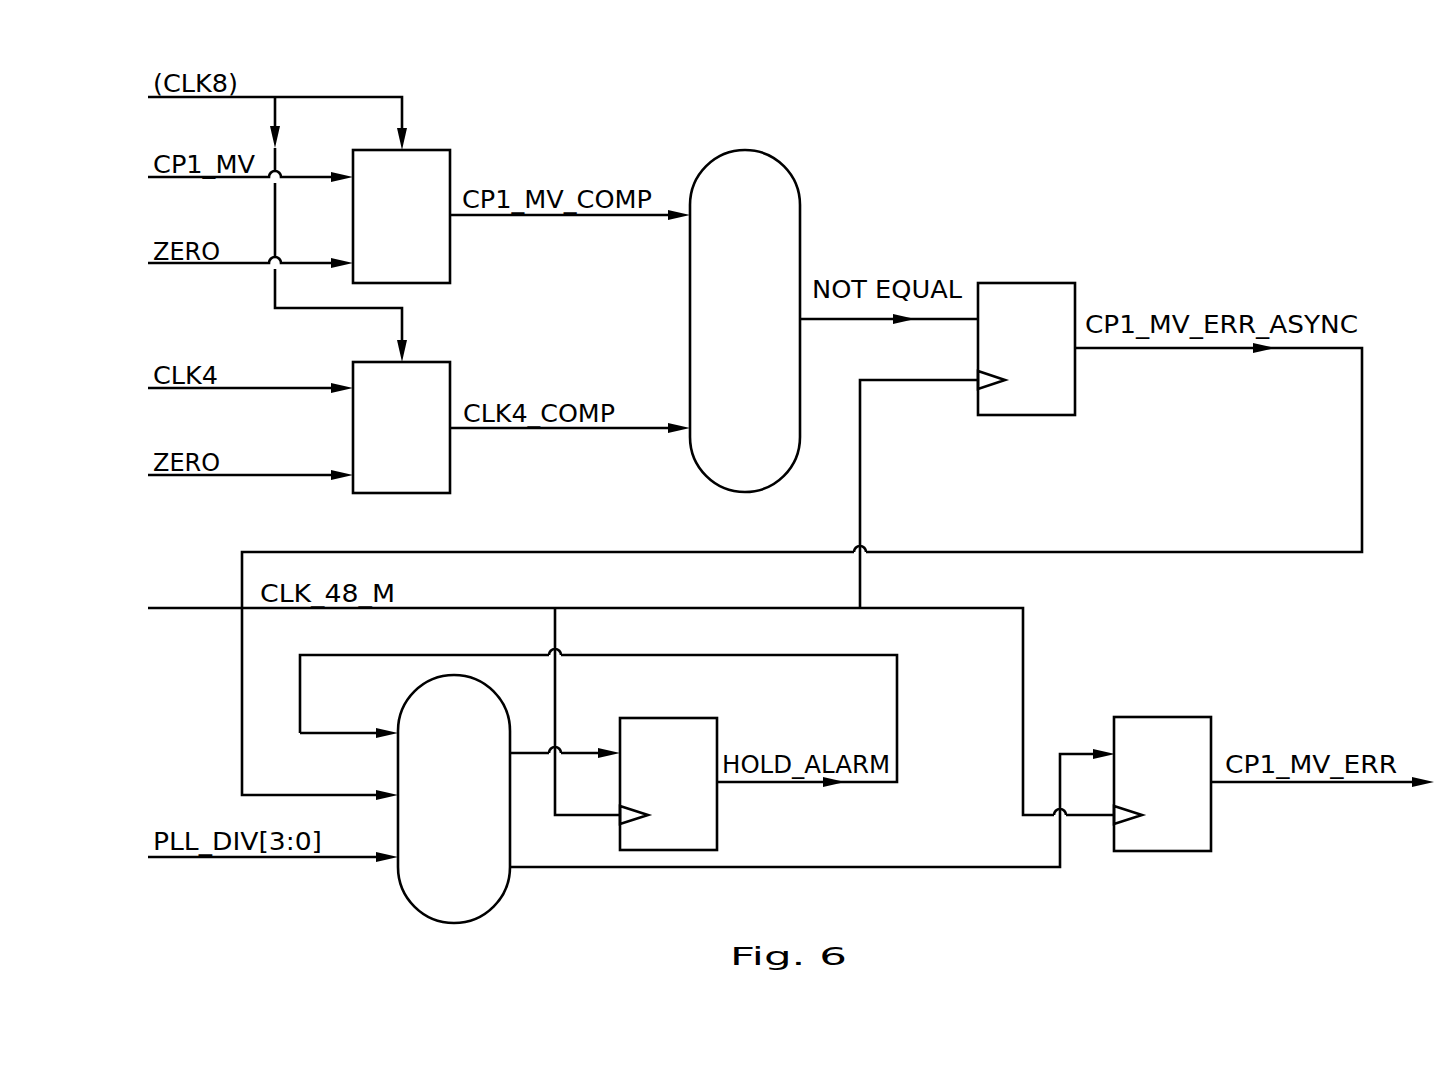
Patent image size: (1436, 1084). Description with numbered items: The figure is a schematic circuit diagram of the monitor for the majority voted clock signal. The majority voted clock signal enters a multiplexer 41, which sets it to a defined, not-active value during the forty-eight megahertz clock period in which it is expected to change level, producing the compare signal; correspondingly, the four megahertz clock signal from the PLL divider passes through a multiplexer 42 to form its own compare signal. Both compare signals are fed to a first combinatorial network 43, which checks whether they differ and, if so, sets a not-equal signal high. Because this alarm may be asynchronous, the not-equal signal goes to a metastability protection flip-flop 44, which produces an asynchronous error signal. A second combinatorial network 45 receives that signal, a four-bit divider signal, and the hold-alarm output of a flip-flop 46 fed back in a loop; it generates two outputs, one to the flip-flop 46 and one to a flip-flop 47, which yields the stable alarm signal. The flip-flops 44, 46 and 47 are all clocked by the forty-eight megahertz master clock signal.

The multiplexer 41 is at (428, 148).
The multiplexer 42 is at (428, 362).
The first combinatorial network 43 is at (789, 173).
The flip-flop 44 is at (1037, 283).
The second combinatorial network 45 is at (405, 900).
The flip-flop 46 is at (690, 718).
The flip-flop 47 is at (1168, 717).